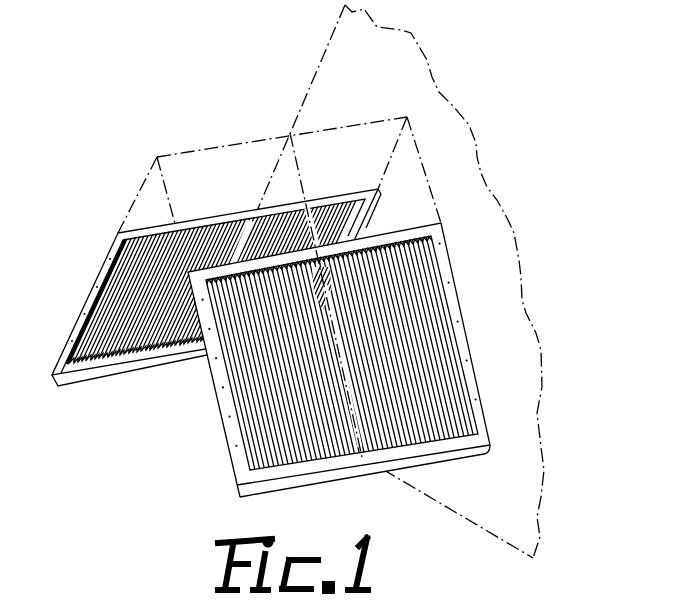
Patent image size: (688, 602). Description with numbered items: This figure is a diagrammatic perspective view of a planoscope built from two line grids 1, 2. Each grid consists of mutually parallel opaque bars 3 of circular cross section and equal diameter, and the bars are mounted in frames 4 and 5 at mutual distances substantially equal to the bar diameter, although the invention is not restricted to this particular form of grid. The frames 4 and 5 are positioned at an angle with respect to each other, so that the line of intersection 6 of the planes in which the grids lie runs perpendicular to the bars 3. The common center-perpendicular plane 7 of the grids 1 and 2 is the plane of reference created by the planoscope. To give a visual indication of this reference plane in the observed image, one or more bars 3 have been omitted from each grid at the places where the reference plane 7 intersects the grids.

The line grid 1 is at (371, 364).
The line grid 2 is at (279, 278).
The opaque bars 3 is at (105, 360).
The frame 4 is at (238, 463).
The frame 5 is at (87, 297).
The line of intersection 6 is at (197, 151).
The common center-perpendicular plane 7 is at (425, 77).